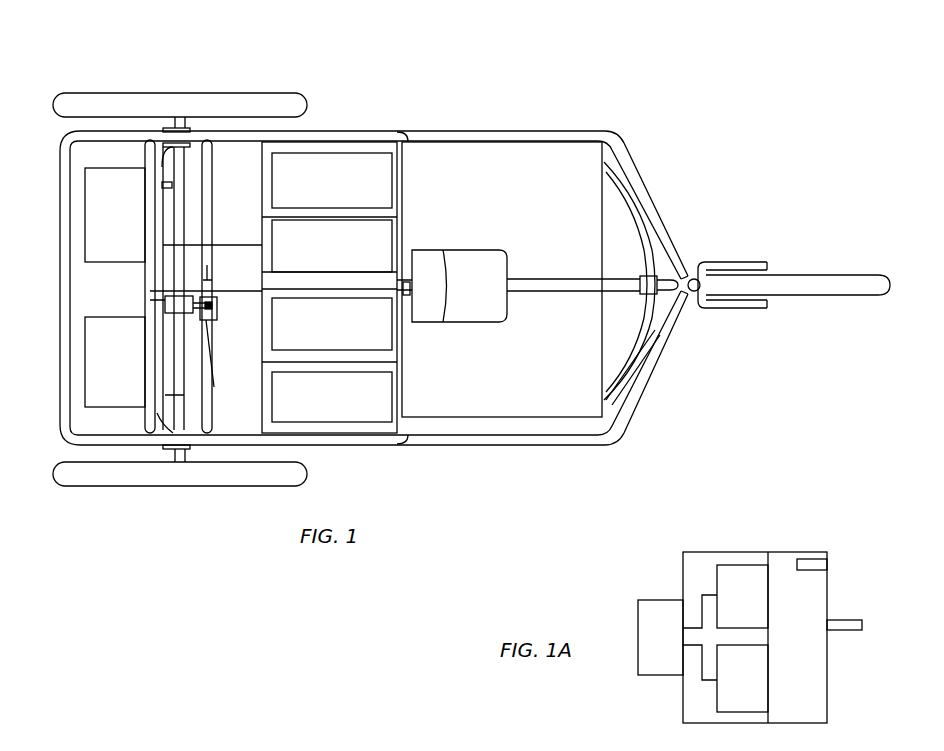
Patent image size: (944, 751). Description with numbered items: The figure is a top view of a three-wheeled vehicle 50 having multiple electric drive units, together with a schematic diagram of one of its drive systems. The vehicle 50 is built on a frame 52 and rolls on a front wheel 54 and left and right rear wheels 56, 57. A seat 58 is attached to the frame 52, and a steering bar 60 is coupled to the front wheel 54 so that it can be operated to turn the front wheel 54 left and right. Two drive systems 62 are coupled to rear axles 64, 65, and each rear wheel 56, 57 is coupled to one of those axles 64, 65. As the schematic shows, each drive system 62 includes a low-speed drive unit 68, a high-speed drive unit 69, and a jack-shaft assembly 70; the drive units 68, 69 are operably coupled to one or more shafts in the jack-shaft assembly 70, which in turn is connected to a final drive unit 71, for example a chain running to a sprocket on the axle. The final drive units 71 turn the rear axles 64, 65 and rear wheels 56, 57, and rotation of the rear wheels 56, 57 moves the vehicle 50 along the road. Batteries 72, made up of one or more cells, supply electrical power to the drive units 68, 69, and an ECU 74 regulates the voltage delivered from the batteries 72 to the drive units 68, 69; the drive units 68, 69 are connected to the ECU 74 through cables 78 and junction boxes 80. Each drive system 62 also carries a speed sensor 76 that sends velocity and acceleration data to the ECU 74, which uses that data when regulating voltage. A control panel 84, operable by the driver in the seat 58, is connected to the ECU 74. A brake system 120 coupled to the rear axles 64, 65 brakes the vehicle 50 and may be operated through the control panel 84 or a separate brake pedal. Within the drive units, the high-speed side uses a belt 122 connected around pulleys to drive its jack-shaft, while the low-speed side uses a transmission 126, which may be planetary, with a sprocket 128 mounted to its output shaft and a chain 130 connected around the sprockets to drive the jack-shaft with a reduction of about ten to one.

In FIG. 1, the vehicle 50 is at (614, 78).
In FIG. 1, the frame 52 is at (438, 130).
In FIG. 1, the front wheel 54 is at (810, 277).
In FIG. 1, the rear wheel 56 is at (108, 478).
In FIG. 1, the rear wheel 57 is at (105, 98).
In FIG. 1, the seat 58 is at (465, 250).
In FIG. 1, the steering bar 60 is at (650, 228).
In FIG. 1, the drive system 62 is at (80, 255).
In FIG. 1A, the drive system 62 is at (648, 555).
In FIG. 1, the axle 64 is at (182, 413).
In FIG. 1, the axle 65 is at (178, 153).
In FIG. 1A, the drive unit 68 is at (742, 596).
In FIG. 1A, the drive unit 69 is at (742, 678).
In FIG. 1A, the jack-shaft assembly 70 is at (799, 707).
In FIG. 1, the final drive unit 71 is at (170, 185).
In FIG. 1A, the final drive unit 71 is at (835, 628).
In FIG. 1, the battery 72 is at (329, 287).
In FIG. 1, the ECU 74 is at (329, 254).
In FIG. 1A, the speed sensor 76 is at (815, 565).
In FIG. 1, the cable 78 is at (197, 243).
In FIG. 1A, the cable 78 is at (700, 672).
In FIG. 1A, the junction box 80 is at (660, 637).
In FIG. 1, the control panel 84 is at (647, 365).
In FIG. 1, the brake system 120 is at (158, 302).
In FIG. 1, the belt 122 is at (207, 148).
In FIG. 1, the transmission 126 is at (218, 312).
In FIG. 1, the sprocket 128 is at (213, 384).
In FIG. 1, the chain 130 is at (202, 280).